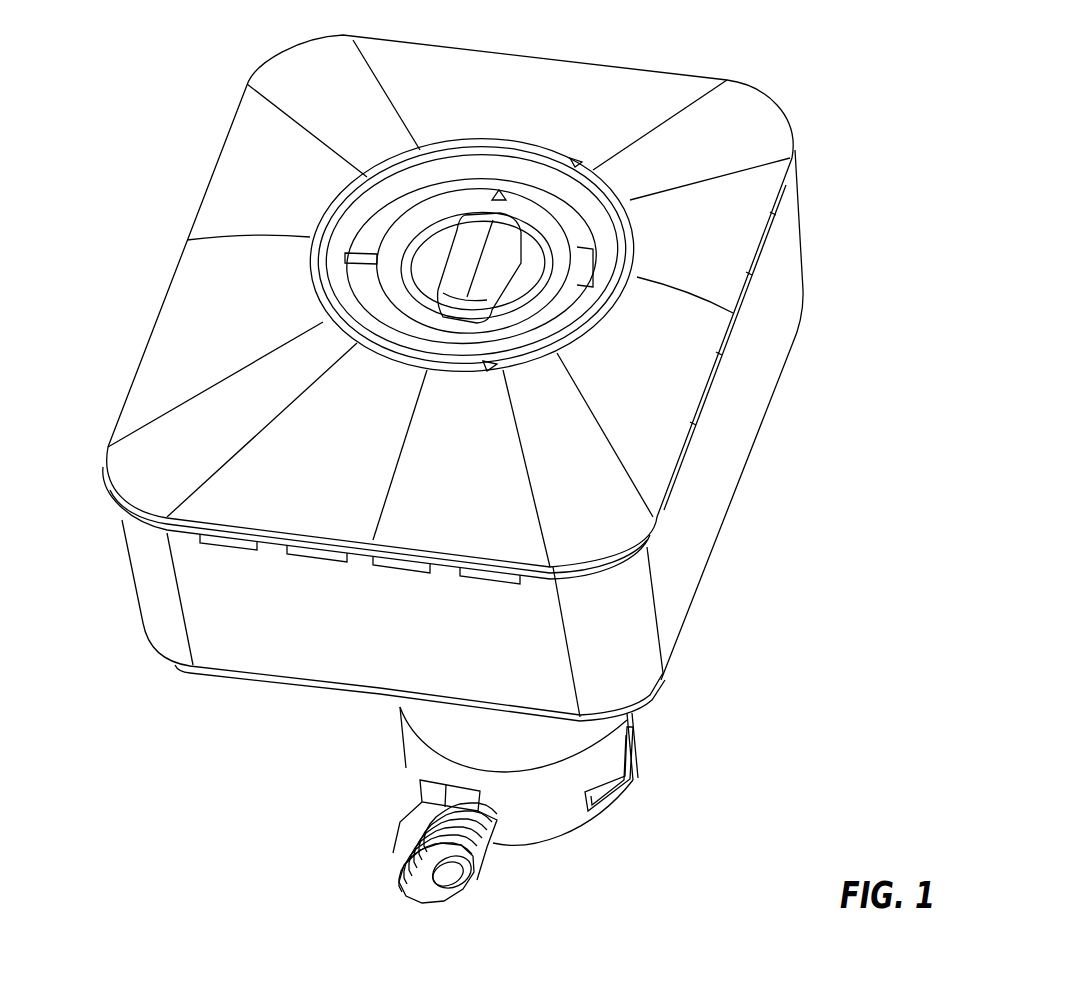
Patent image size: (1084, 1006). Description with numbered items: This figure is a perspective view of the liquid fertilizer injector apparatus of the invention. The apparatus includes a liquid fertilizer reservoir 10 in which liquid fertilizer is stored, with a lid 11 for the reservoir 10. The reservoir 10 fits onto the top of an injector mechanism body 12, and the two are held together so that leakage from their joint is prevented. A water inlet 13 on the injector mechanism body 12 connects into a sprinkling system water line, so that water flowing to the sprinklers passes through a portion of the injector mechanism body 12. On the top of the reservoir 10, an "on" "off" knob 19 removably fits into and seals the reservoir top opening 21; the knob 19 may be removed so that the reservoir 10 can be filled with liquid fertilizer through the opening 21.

The liquid fertilizer reservoir 10 is at (723, 447).
The lid 11 is at (253, 197).
The injector mechanism body 12 is at (448, 733).
The water inlet 13 is at (420, 890).
The on off knob 19 is at (577, 253).
The reservoir top opening 21 is at (613, 313).